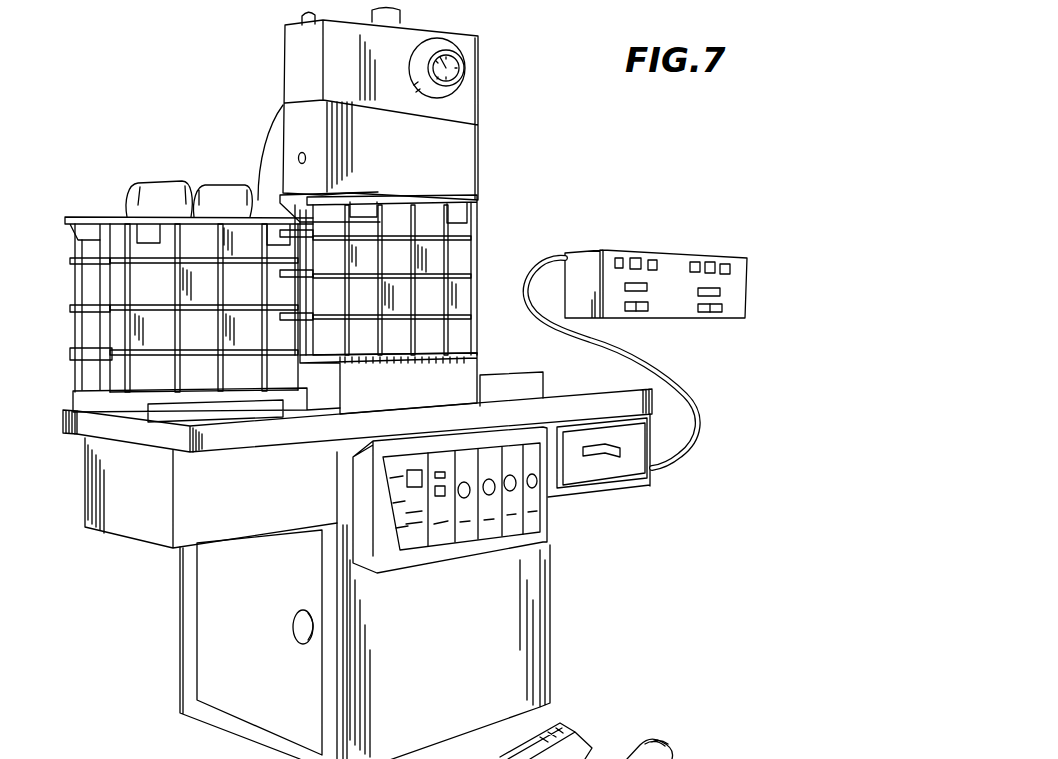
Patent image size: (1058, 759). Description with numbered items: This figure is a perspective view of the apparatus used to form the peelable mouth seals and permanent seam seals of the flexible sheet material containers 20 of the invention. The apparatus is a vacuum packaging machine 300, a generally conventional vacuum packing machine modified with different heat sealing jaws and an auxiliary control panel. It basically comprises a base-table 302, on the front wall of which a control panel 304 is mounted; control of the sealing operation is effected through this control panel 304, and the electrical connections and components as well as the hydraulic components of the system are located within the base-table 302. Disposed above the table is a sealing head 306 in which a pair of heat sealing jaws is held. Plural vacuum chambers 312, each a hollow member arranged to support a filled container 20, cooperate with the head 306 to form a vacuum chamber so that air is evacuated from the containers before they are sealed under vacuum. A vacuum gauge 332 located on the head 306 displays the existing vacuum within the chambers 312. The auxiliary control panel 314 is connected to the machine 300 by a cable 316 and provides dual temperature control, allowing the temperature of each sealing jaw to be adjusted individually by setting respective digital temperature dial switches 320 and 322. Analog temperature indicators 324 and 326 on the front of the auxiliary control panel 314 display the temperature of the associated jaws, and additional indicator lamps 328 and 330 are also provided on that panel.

The container 20 is at (212, 185).
The vacuum packaging machine 300 is at (533, 179).
The base-table 302 is at (503, 665).
The control panel 304 is at (505, 508).
The sealing head 306 is at (446, 152).
The vacuum chambers 312 is at (133, 253).
The auxiliary control panel 314 is at (785, 240).
The cable 316 is at (667, 373).
The digital temperature dial switch 320 is at (638, 310).
The digital temperature dial switch 322 is at (712, 313).
The analog temperature indicator 324 is at (623, 287).
The analog temperature indicator 326 is at (720, 290).
The indicator lamp 328 is at (638, 257).
The indicator lamp 330 is at (710, 258).
The vacuum gauge 332 is at (458, 65).